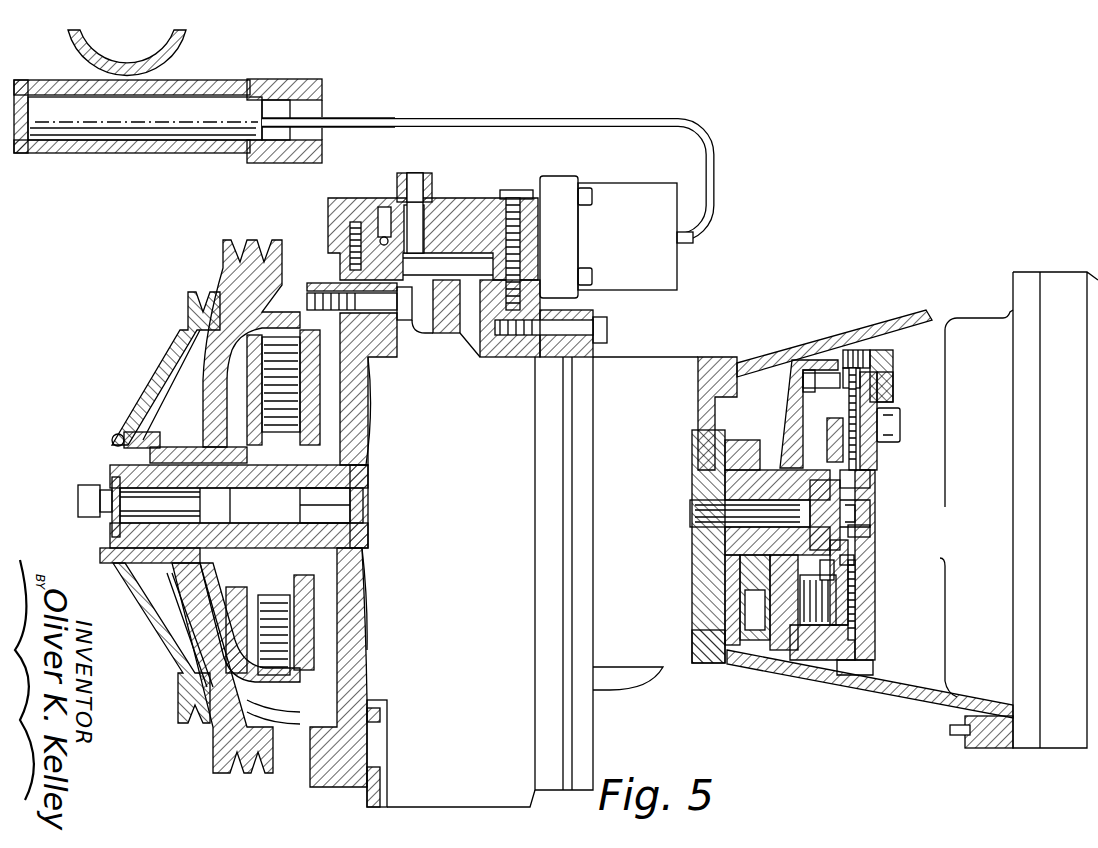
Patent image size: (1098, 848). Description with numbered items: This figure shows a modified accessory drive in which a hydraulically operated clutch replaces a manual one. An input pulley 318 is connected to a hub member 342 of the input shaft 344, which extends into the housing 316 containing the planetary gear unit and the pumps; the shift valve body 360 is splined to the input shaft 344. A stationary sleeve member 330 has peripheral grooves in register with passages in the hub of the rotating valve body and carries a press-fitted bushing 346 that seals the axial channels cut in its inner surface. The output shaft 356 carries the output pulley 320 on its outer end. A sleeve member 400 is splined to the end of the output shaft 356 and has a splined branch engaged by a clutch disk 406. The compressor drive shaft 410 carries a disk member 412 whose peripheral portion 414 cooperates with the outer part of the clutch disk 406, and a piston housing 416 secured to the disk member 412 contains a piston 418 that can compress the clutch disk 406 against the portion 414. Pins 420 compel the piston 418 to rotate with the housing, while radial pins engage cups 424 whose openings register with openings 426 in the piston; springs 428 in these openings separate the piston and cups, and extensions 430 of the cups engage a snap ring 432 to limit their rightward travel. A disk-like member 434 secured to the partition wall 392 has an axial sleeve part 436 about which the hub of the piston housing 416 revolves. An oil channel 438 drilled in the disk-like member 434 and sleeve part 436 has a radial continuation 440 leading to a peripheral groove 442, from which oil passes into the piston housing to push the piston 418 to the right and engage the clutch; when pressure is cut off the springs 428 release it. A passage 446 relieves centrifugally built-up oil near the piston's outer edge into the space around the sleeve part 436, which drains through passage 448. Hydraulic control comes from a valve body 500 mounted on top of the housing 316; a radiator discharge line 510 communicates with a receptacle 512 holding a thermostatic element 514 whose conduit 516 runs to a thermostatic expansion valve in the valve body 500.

The radiator discharge line 510 is at (187, 31).
The receptacle 512 is at (238, 95).
The thermostatic element 514 is at (122, 140).
The conduit 516 is at (367, 125).
The valve body 500 is at (470, 210).
The input pulley 318 is at (226, 262).
The shift valve body 360 is at (258, 320).
The output pulley 320 is at (188, 325).
The hub member 342 is at (135, 440).
The bushing 346 is at (238, 478).
The stationary sleeve member 330 is at (272, 470).
The input shaft 344 is at (300, 490).
The output shaft 356 is at (365, 508).
The partition wall 392 is at (718, 365).
The piston housing 416 is at (800, 370).
The pins 420 is at (815, 352).
The clutch disk 406 is at (875, 356).
The piston 418 is at (785, 398).
The portion 414 is at (880, 378).
The disk member 412 is at (878, 392).
The disk-like member 434 is at (700, 445).
The cups 424 is at (856, 440).
The sleeve member 400 is at (700, 480).
The radial continuation 440 is at (870, 478).
The drive shaft 410 is at (870, 490).
The oil channel 438 is at (712, 500).
The peripheral groove 442 is at (872, 535).
The snap ring 432 is at (856, 560).
The extensions 430 is at (836, 572).
The sleeve part 436 is at (700, 570).
The passage 448 is at (712, 598).
The springs 428 is at (840, 600).
The openings 426 is at (780, 620).
The passage 446 is at (808, 672).
The housing 316 is at (528, 798).